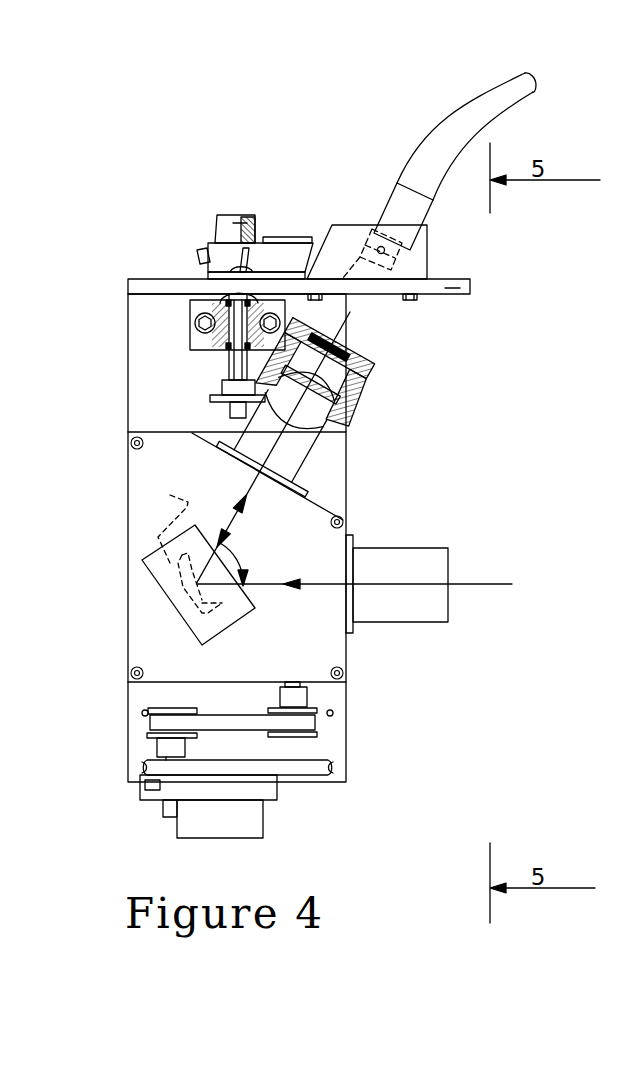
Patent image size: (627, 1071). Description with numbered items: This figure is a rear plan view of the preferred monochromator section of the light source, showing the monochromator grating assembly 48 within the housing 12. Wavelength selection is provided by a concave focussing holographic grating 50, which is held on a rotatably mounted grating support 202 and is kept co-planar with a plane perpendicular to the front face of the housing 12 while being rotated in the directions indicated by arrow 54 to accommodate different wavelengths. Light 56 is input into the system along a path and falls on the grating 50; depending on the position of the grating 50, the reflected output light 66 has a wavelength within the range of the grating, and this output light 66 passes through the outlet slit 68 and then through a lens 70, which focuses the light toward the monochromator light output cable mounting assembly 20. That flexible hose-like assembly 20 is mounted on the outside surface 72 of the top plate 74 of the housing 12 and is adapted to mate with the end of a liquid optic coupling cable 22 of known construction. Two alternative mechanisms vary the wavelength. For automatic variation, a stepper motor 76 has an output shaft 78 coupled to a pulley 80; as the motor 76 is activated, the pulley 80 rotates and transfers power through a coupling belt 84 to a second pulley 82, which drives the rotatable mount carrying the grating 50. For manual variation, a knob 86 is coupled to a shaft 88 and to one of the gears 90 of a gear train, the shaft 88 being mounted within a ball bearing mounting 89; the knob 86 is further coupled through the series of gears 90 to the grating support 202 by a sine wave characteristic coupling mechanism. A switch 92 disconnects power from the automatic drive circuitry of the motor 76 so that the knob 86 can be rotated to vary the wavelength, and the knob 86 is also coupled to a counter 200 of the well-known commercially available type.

The housing 12 is at (165, 270).
The monochromator light output cable mounting assembly 20 is at (428, 248).
The liquid optic coupling cable 22 is at (531, 93).
The monochromator grating assembly 48 is at (224, 182).
The concave focussing holographic grating 50 is at (186, 501).
The arrow 54 is at (243, 562).
The light 56 is at (395, 583).
The output light 66 is at (232, 528).
The outlet slit 68 is at (340, 373).
The lens 70 is at (348, 330).
The outside surface 72 is at (464, 284).
The top plate 74 is at (445, 288).
The stepper motor 76 is at (230, 822).
The output shaft 78 is at (165, 758).
The pulley 80 is at (167, 706).
The second pulley 82 is at (313, 702).
The coupling belt 84 is at (240, 715).
The knob 86 is at (265, 232).
The shaft 88 is at (228, 368).
The ball bearing mounting 89 is at (194, 327).
The gears 90 is at (212, 396).
The switch 92 is at (203, 250).
The counter 200 is at (278, 228).
The rotatably mounted grating support 202 is at (254, 606).